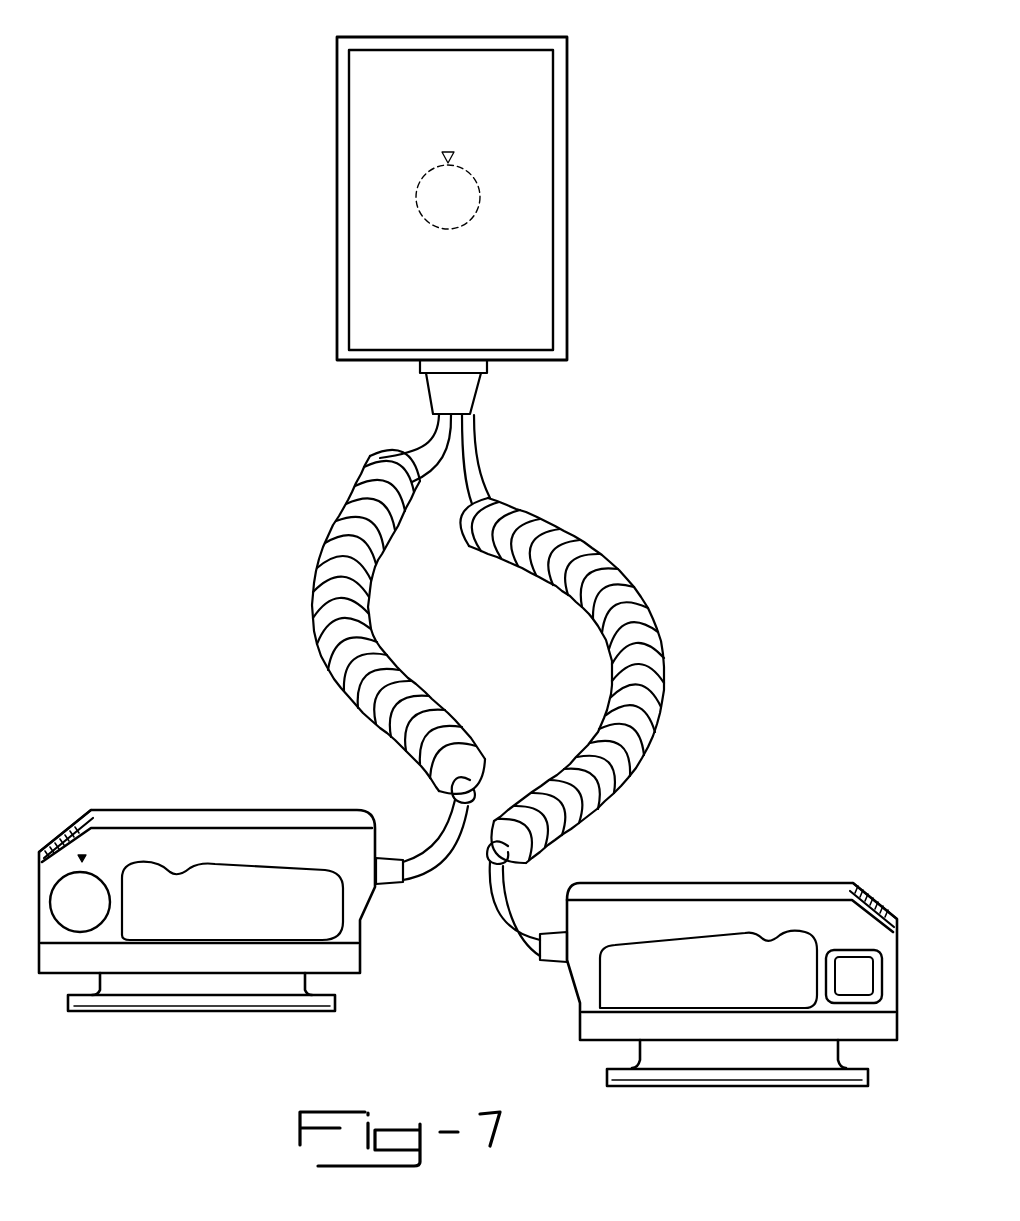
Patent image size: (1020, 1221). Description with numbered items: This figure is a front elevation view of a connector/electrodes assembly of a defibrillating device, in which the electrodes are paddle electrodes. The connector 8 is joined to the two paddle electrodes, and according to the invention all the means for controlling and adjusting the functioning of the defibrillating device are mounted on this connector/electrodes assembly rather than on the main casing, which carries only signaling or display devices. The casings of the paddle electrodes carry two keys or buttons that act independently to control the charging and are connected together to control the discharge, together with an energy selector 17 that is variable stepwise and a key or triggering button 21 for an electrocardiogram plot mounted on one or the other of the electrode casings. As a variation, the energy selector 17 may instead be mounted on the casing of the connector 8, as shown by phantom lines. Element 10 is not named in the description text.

The connector 8 is at (572, 162).
The housing of control unit 10 is at (570, 229).
The energy selector 17 is at (93, 878).
The triggering button 21 is at (845, 972).